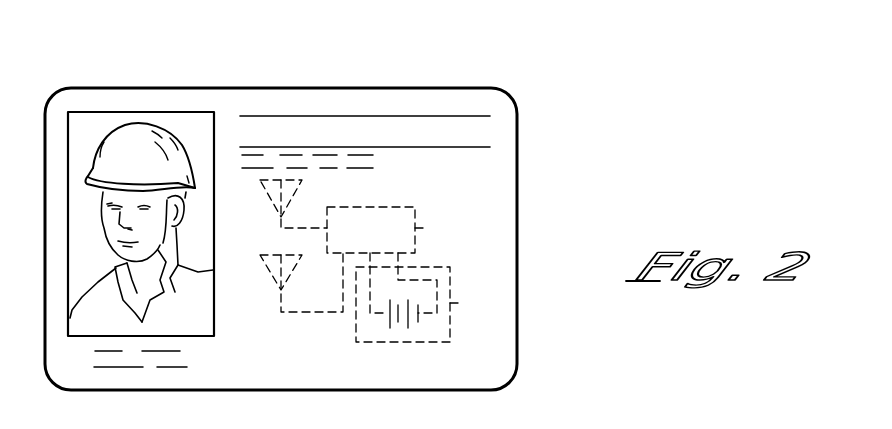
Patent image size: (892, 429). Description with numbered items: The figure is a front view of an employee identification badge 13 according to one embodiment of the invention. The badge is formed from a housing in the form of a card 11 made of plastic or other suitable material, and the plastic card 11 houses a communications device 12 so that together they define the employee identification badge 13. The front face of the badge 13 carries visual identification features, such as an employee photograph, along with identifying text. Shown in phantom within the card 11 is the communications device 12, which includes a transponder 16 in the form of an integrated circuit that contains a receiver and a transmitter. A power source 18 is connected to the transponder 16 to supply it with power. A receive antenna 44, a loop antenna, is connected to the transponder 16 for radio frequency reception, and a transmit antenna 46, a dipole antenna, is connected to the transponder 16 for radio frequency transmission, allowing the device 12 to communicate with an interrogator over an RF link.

The card 11 is at (480, 342).
The communications device 12 is at (488, 214).
The employee identification badge 13 is at (488, 70).
The transponder 16 is at (423, 228).
The power source 18 is at (458, 303).
The receive antenna 44 is at (263, 193).
The transmit antenna 46 is at (268, 272).